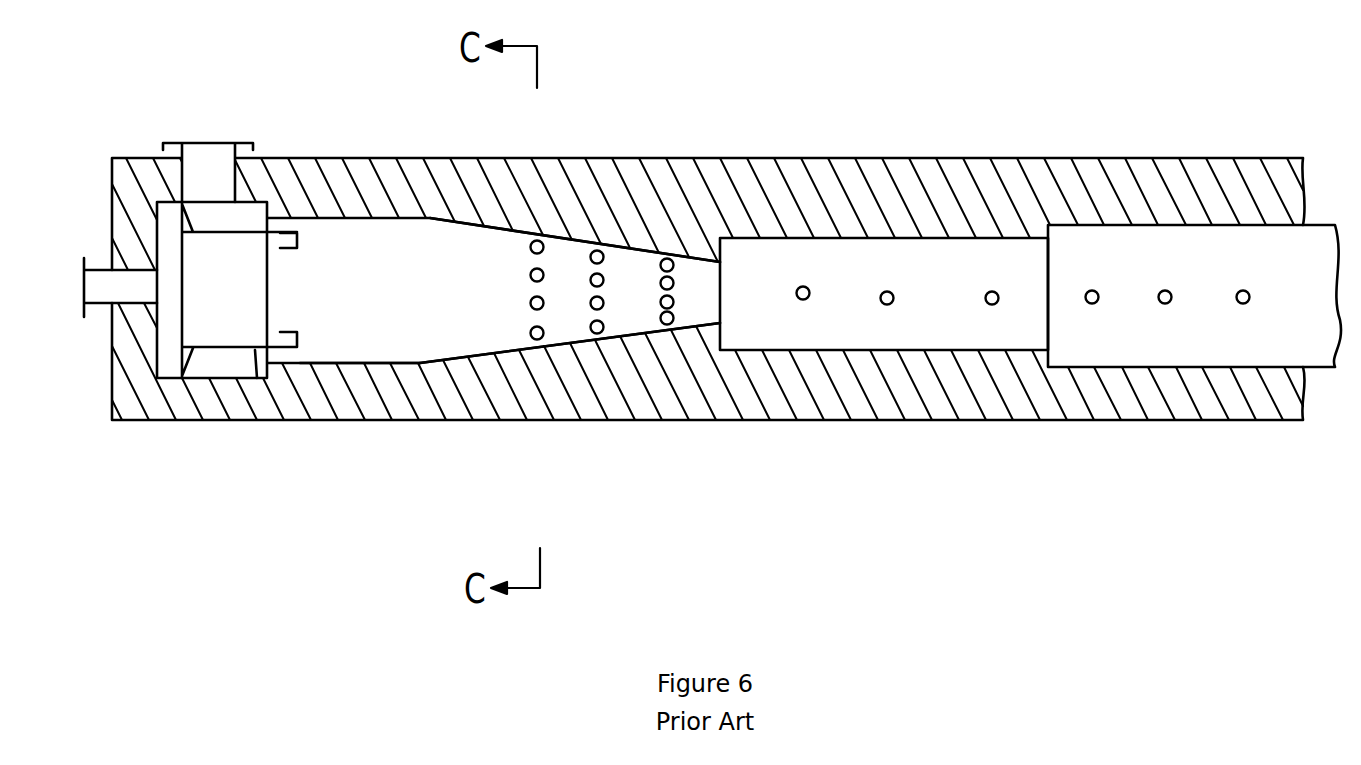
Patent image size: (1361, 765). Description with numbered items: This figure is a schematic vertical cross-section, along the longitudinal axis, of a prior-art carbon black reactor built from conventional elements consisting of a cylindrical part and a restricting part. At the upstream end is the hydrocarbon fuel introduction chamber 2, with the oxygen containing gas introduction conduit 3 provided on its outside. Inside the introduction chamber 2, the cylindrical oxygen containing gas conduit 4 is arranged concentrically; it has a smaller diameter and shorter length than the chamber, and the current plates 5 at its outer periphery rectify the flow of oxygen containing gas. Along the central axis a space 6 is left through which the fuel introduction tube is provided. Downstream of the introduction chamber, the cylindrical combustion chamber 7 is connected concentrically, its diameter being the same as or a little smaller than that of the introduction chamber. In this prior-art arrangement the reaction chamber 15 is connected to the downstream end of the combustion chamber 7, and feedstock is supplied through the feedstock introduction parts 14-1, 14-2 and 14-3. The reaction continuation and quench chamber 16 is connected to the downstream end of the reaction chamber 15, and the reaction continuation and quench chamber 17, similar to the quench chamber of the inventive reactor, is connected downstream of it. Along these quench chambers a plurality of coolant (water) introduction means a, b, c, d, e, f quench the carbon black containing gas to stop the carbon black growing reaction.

The hydrocarbon fuel introduction chamber 2 is at (258, 182).
The oxygen containing gas introduction conduit 3 is at (205, 142).
The oxygen containing gas conduit 4 is at (250, 350).
The current plates 5 is at (190, 350).
The space 6 is at (107, 305).
The combustion chamber 7 is at (345, 365).
The feedstock introduction part 14-1 is at (531, 247).
The feedstock introduction part 14-2 is at (591, 257).
The feedstock introduction part 14-3 is at (661, 265).
The reaction chamber 15 is at (568, 240).
The reaction continuation and quench chamber 16 is at (913, 238).
The reaction continuation and quench chamber 17 is at (1150, 225).
The coolant introduction means a is at (803, 299).
The coolant introduction means b is at (887, 304).
The coolant introduction means c is at (992, 304).
The coolant introduction means d is at (1092, 303).
The coolant introduction means e is at (1165, 303).
The coolant introduction means f is at (1243, 303).